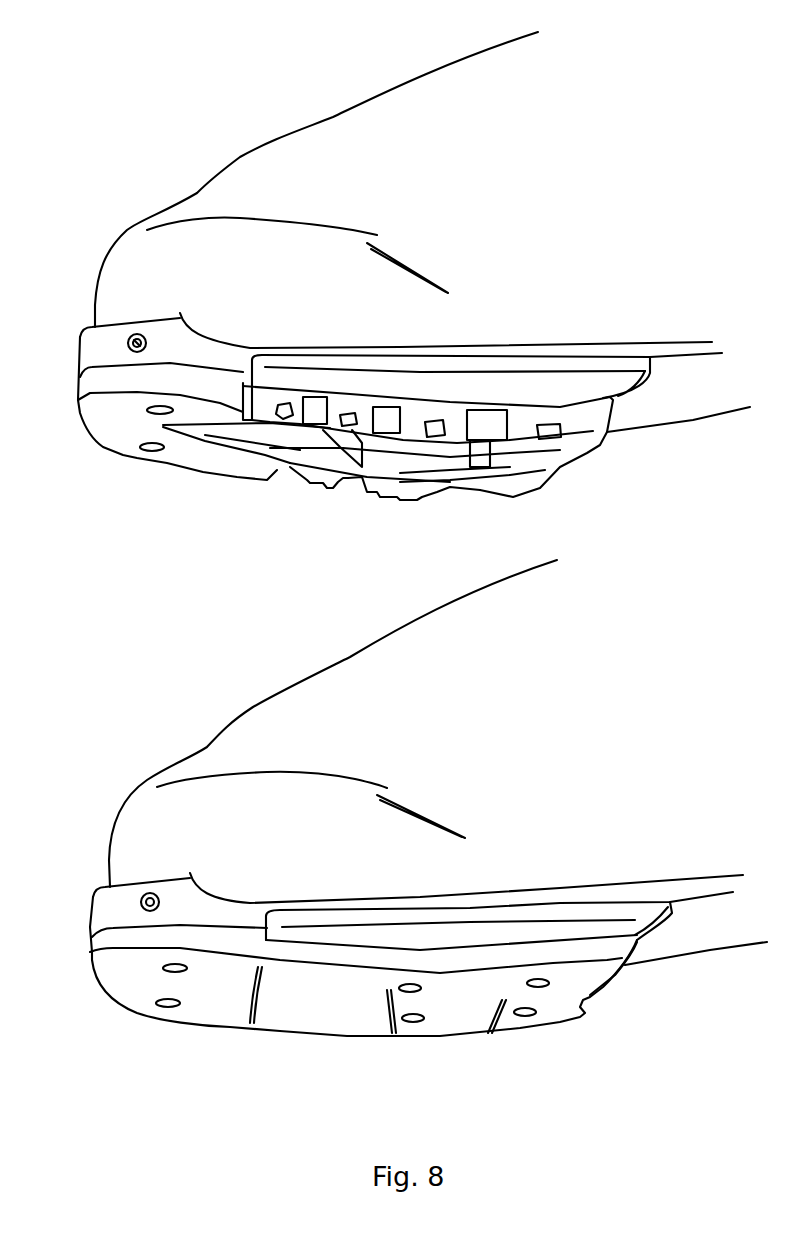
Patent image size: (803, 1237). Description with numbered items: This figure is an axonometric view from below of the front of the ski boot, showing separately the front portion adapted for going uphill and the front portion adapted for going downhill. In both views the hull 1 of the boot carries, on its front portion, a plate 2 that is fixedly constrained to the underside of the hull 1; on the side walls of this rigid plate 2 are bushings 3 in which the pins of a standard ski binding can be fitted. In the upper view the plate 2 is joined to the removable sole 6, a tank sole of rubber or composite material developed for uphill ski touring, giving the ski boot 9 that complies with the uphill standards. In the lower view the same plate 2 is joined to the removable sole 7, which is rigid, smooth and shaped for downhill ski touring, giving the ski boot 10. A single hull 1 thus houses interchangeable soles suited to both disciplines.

The hull 1 is at (340, 148).
The plate 2 is at (207, 352).
The bushings 3 is at (134, 336).
The removable sole 6 is at (236, 484).
The removable sole 7 is at (211, 1036).
The ski boot 9 is at (124, 76).
The ski boot 10 is at (122, 638).